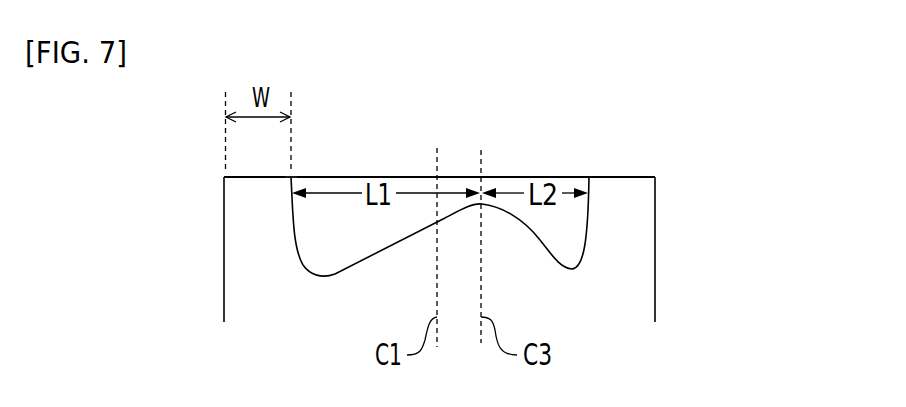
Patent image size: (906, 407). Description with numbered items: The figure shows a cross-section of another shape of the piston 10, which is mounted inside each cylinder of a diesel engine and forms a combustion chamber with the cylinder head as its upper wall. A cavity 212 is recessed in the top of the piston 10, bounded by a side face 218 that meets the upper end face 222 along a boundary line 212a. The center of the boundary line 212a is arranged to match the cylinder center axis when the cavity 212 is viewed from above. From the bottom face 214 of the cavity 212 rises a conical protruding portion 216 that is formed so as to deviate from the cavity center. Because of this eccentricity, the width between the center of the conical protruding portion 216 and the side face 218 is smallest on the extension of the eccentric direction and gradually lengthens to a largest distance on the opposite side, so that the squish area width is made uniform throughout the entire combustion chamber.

The piston 10 is at (696, 162).
The cavity 212 is at (453, 181).
The boundary line 212a is at (292, 177).
The bottom face 214 is at (325, 279).
The conical protruding portion 216 is at (508, 203).
The side face 218 is at (293, 246).
The upper end face 222 is at (259, 177).